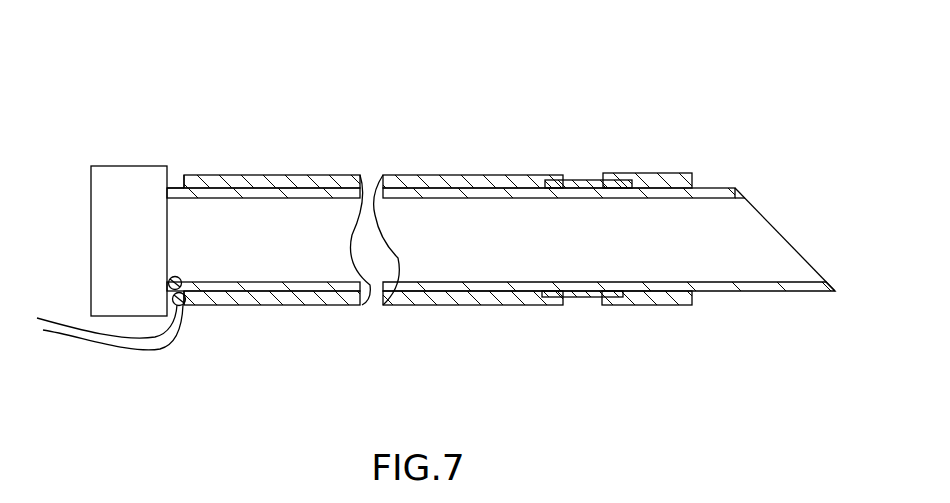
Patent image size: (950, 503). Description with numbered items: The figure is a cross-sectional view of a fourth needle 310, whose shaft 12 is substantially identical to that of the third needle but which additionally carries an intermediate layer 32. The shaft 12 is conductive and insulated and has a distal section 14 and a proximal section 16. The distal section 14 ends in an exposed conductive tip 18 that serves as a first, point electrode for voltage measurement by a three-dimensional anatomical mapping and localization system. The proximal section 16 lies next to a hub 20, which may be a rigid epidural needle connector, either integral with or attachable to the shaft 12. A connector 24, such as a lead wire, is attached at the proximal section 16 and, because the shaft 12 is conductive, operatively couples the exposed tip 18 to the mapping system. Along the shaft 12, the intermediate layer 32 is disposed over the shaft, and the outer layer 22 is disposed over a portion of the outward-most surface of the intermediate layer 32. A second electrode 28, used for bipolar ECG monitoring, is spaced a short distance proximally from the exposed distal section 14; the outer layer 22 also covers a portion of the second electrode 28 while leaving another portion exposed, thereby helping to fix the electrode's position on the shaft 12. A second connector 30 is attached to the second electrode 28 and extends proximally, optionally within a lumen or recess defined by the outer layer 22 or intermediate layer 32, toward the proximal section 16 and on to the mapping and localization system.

The fourth needle 310 is at (422, 92).
The shaft 12 is at (700, 187).
The distal section 14 is at (715, 190).
The proximal section 16 is at (178, 188).
The conductive tip 18 is at (776, 229).
The hub 20 is at (91, 213).
The outer layer 22 is at (643, 184).
The connector 24 is at (85, 325).
The second electrode 28 is at (583, 296).
The second connector 30 is at (153, 349).
The intermediate layer 32 is at (465, 187).